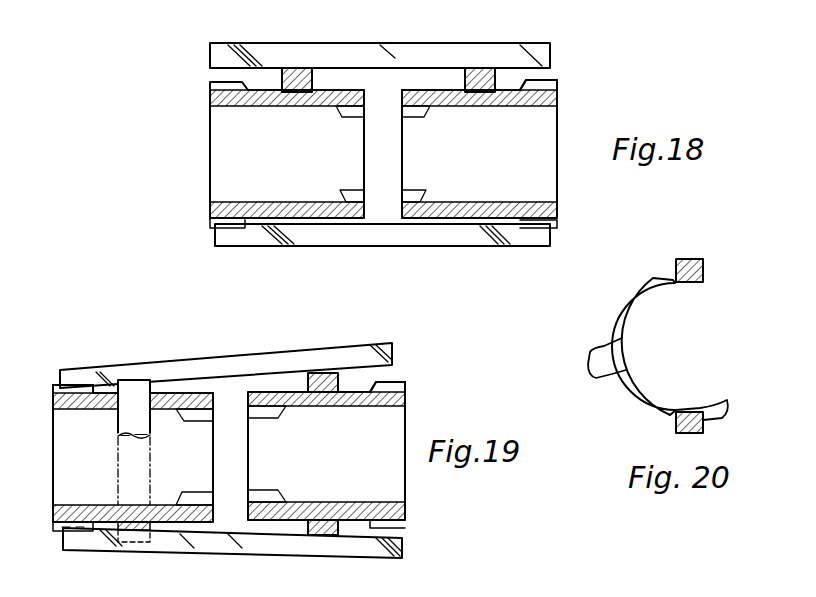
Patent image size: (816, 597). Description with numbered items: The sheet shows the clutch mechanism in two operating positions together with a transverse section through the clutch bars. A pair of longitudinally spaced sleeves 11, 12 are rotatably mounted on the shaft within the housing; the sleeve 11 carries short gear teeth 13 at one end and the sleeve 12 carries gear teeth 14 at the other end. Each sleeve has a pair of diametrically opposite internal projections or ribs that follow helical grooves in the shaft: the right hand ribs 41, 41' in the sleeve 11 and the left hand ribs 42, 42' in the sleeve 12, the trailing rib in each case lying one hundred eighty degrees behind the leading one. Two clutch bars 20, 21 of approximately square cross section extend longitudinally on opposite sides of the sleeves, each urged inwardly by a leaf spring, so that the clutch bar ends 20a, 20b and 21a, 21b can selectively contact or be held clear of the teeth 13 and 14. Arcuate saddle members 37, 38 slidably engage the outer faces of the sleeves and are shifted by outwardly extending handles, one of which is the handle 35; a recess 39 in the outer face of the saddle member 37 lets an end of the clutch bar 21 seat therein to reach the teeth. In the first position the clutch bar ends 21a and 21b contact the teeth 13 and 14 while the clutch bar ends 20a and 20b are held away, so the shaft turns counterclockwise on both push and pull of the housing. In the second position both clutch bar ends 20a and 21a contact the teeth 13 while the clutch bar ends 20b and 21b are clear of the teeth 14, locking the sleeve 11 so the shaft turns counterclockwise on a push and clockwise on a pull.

In FIG. 18, the sleeve 11 is at (210, 102).
In FIG. 19, the sleeve 11 is at (53, 406).
In FIG. 18, the sleeve 12 is at (557, 100).
In FIG. 19, the sleeve 12 is at (405, 398).
In FIG. 18, the gear teeth 13 is at (212, 226).
In FIG. 19, the gear teeth 13 is at (60, 386).
In FIG. 18, the gear teeth 14 is at (557, 86).
In FIG. 19, the gear teeth 14 is at (405, 388).
In FIG. 18, the clutch bar 20 is at (386, 52).
In FIG. 19, the clutch bar 20 is at (247, 358).
In FIG. 20, the clutch bar 20 is at (704, 280).
In FIG. 18, the clutch bar end 20a is at (210, 55).
In FIG. 19, the clutch bar end 20a is at (123, 337).
In FIG. 18, the clutch bar end 20b is at (550, 53).
In FIG. 19, the clutch bar end 20b is at (392, 357).
In FIG. 18, the clutch bar 21 is at (390, 246).
In FIG. 19, the clutch bar 21 is at (226, 548).
In FIG. 20, the clutch bar 21 is at (704, 430).
In FIG. 18, the clutch bar end 21a is at (226, 238).
In FIG. 19, the clutch bar end 21a is at (68, 542).
In FIG. 18, the clutch bar end 21b is at (553, 232).
In FIG. 19, the clutch bar end 21b is at (403, 548).
In FIG. 20, the handle 35 is at (596, 326).
In FIG. 18, the saddle member 37 is at (478, 68).
In FIG. 19, the saddle member 37 is at (328, 373).
In FIG. 18, the saddle member 38 is at (296, 68).
In FIG. 19, the saddle member 38 is at (122, 426).
In FIG. 20, the recess 39 is at (694, 412).
In FIG. 18, the internal projection 41 is at (324, 123).
In FIG. 19, the internal projection 41 is at (209, 429).
In FIG. 18, the internal projection 41' is at (328, 182).
In FIG. 19, the internal projection 41' is at (211, 482).
In FIG. 18, the internal projection 42 is at (440, 123).
In FIG. 19, the internal projection 42 is at (285, 426).
In FIG. 18, the internal projection 42' is at (437, 180).
In FIG. 19, the internal projection 42' is at (283, 480).